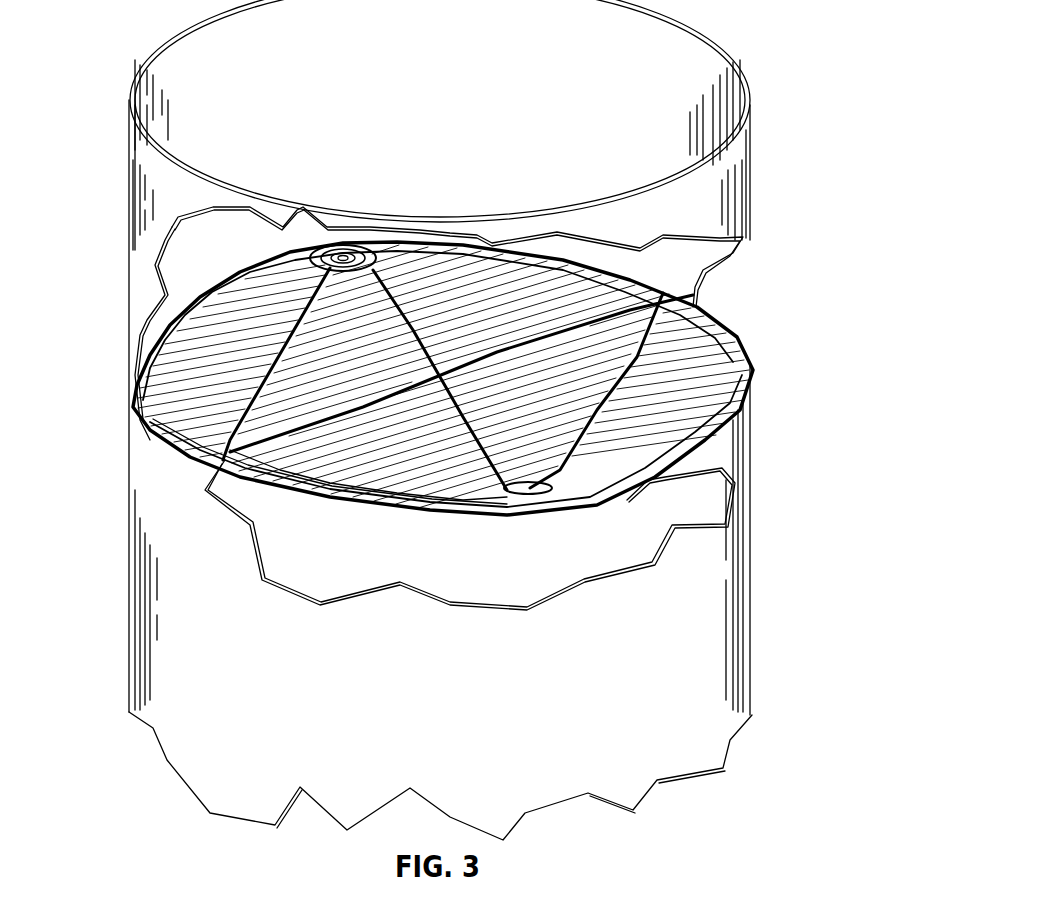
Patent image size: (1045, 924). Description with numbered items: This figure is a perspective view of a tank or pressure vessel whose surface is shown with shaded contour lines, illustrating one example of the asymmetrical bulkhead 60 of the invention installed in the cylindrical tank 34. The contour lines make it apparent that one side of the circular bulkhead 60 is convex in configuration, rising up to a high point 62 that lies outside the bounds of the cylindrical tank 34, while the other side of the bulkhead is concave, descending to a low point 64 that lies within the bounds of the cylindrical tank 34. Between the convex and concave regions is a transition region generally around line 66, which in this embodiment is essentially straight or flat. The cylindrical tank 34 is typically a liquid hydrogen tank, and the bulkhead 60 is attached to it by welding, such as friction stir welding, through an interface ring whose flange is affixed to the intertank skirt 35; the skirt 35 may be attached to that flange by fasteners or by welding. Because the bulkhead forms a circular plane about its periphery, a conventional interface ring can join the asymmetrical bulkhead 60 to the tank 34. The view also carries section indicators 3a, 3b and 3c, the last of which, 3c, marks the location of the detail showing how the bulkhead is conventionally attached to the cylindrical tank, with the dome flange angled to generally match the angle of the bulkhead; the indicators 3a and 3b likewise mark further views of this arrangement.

The cylindrical tank 34 is at (128, 579).
The intertank skirt 35 is at (750, 153).
The asymmetrical bulkhead 60 is at (733, 336).
The high point 62 is at (342, 245).
The low point 64 is at (542, 523).
The transition line 66 is at (312, 486).
The section line 3a is at (174, 250).
The section line 3b is at (718, 292).
The section line 3c is at (174, 250).